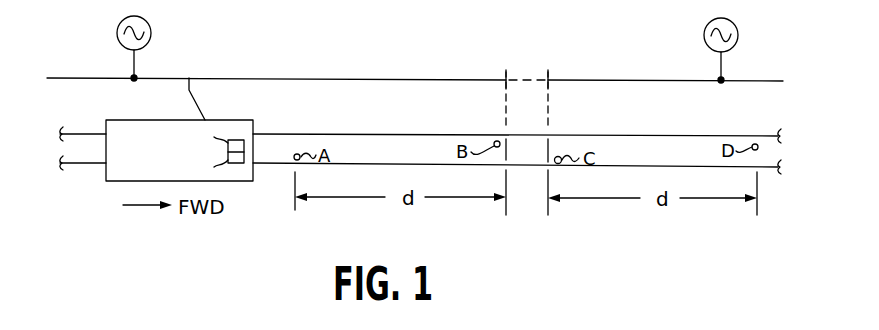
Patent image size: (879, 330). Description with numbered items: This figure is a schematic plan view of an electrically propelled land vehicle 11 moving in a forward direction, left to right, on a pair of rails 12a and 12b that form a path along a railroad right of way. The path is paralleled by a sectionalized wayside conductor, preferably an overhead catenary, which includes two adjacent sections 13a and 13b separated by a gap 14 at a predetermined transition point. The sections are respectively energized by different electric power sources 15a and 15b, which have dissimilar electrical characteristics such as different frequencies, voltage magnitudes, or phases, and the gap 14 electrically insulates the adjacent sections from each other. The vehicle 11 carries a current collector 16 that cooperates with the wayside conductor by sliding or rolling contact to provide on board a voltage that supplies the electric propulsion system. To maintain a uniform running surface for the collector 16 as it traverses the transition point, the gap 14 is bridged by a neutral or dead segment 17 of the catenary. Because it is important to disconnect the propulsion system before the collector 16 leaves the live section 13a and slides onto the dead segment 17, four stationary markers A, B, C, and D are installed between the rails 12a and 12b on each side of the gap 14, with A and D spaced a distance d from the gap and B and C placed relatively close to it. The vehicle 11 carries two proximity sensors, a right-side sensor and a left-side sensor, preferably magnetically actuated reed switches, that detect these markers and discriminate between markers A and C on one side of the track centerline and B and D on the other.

The electrically propelled land vehicle 11 is at (122, 181).
The rail 12a is at (393, 134).
The rail 12b is at (370, 166).
The wayside conductor section 13a is at (365, 79).
The wayside conductor section 13b is at (648, 80).
The gap 14 is at (543, 59).
The electric power source 15a is at (151, 41).
The electric power source 15b is at (704, 29).
The current collector 16 is at (201, 112).
The dead segment 17 is at (529, 86).